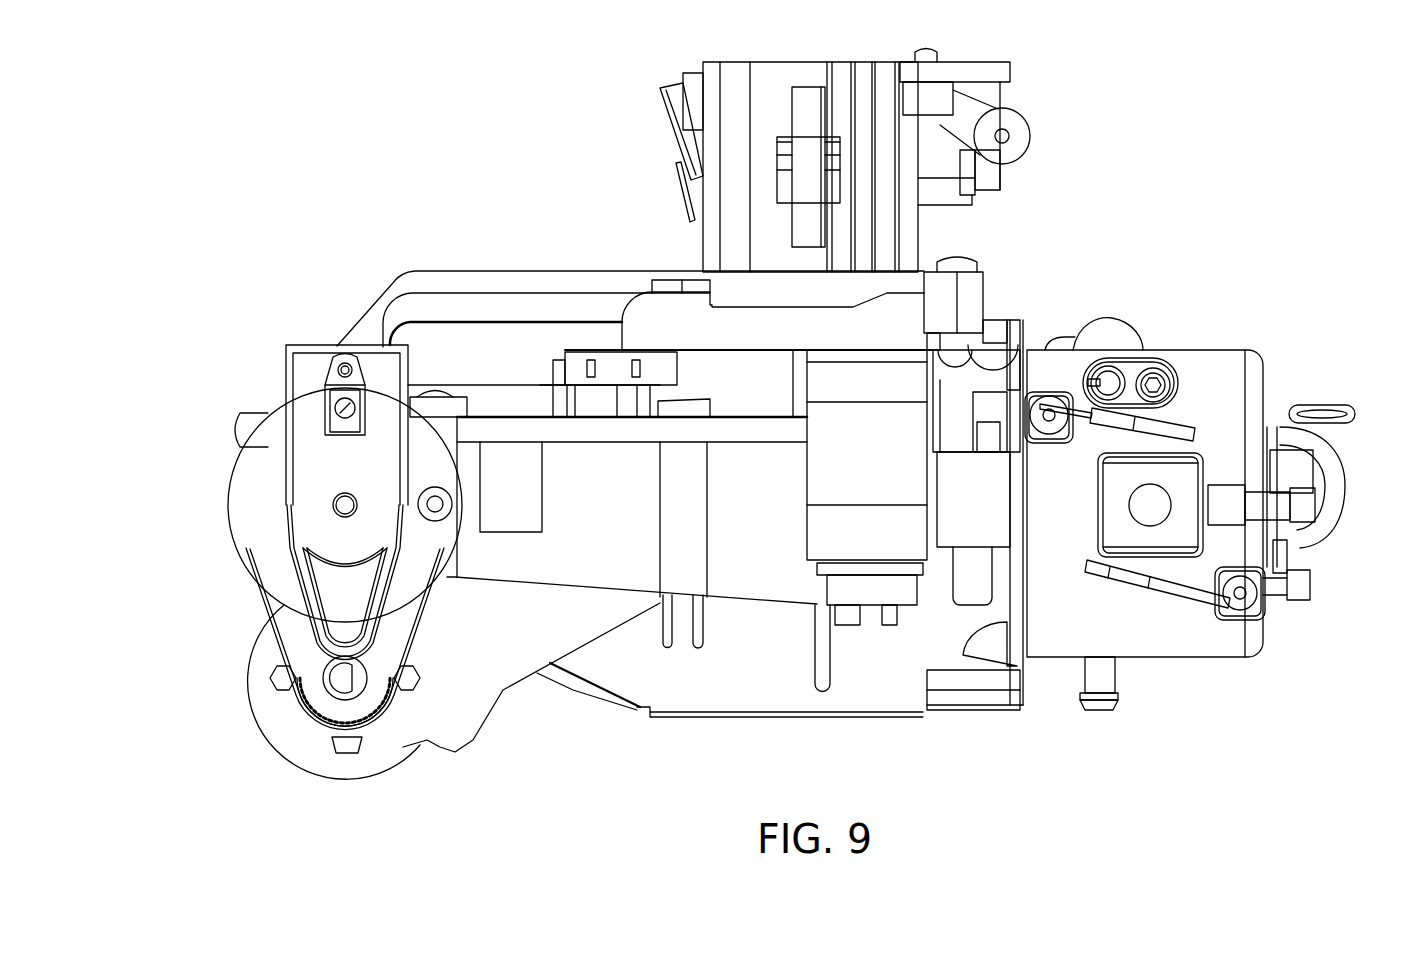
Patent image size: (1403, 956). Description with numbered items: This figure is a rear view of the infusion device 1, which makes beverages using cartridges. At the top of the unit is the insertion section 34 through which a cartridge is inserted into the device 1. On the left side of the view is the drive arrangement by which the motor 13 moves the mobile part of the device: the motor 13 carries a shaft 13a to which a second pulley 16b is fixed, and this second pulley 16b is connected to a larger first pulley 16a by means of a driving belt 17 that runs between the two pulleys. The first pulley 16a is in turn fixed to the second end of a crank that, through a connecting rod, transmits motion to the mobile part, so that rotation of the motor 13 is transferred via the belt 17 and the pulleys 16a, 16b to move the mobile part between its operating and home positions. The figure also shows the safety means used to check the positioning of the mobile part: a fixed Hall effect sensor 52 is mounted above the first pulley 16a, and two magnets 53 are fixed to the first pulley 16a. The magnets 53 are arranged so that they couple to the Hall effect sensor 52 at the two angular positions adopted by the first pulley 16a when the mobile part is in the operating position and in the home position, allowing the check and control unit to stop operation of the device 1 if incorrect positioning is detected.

The infusion device 1 is at (414, 172).
The insertion section 34 is at (730, 47).
The Hall effect sensor 52 is at (325, 412).
The magnets 53 is at (345, 370).
The first pulley 16a is at (250, 527).
The second pulley 16b is at (372, 722).
The driving belt 17 is at (273, 643).
The motor 13 is at (295, 732).
The motor shaft 13a is at (345, 680).